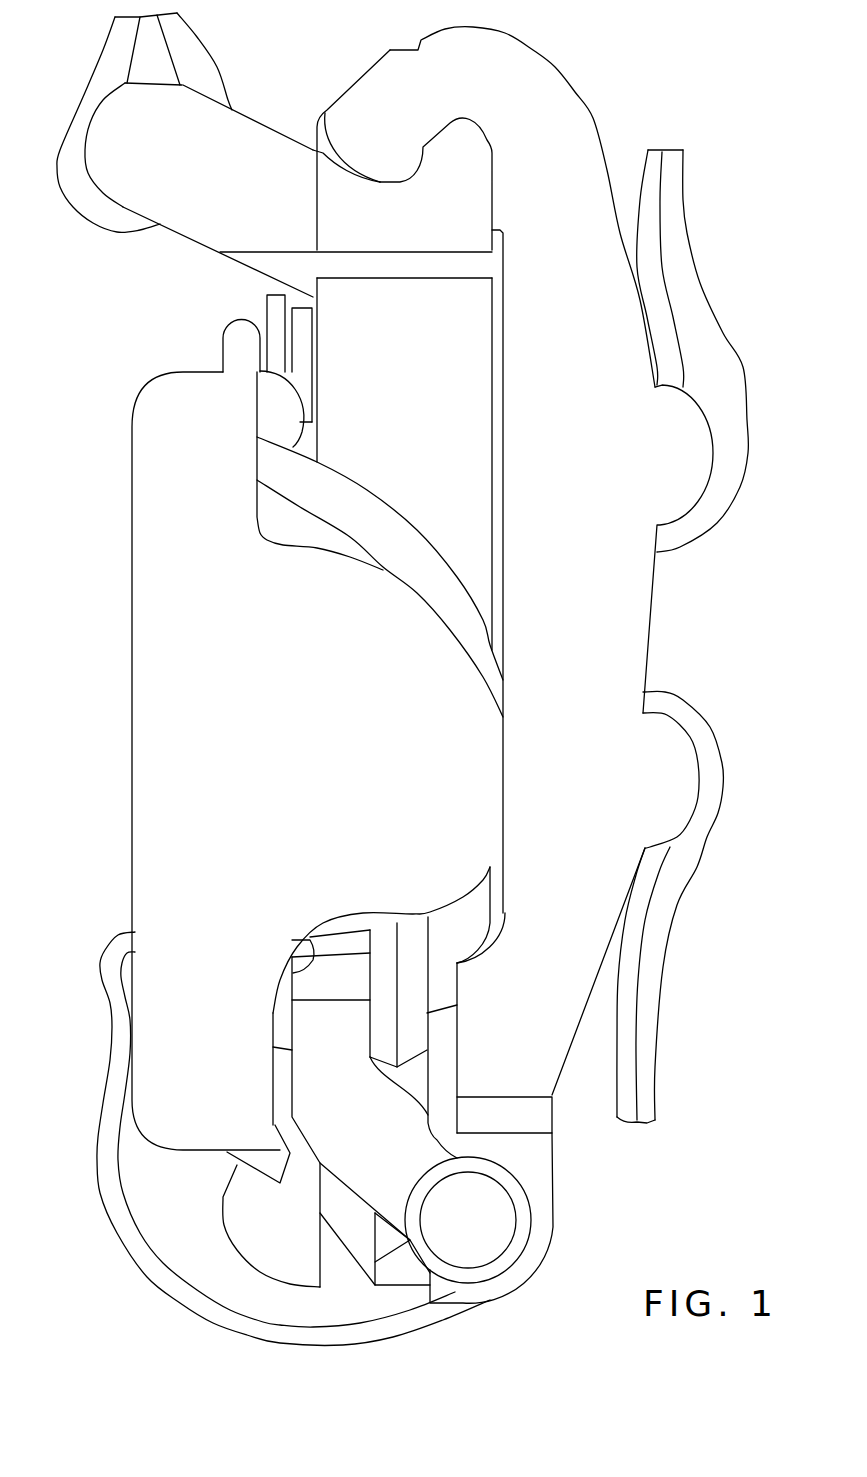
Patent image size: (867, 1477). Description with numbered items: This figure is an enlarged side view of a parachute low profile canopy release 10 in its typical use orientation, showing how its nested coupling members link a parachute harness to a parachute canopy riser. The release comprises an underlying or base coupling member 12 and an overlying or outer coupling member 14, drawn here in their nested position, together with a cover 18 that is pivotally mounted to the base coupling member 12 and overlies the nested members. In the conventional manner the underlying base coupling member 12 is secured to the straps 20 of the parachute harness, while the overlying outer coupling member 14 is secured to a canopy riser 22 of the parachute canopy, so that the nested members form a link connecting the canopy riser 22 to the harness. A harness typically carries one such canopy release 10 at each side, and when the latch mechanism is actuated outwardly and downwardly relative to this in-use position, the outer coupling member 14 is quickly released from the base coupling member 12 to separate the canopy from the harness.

The canopy release 10 is at (109, 789).
The base coupling member 12 is at (595, 110).
The outer coupling member 14 is at (197, 245).
The cover 18 is at (322, 704).
The straps 20 is at (697, 282).
The canopy riser 22 is at (112, 32).